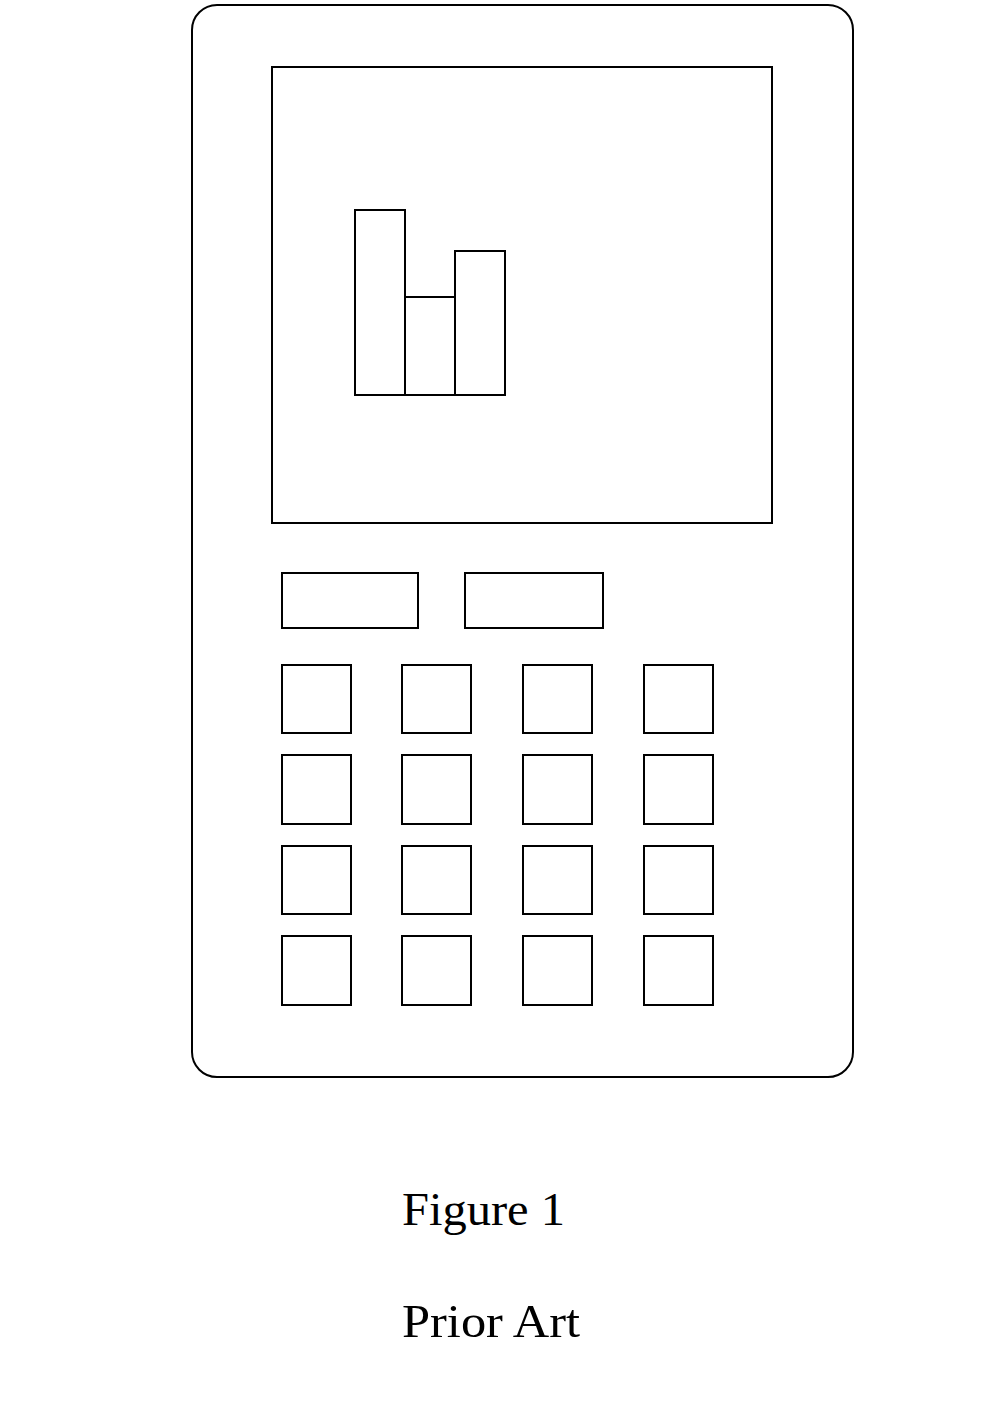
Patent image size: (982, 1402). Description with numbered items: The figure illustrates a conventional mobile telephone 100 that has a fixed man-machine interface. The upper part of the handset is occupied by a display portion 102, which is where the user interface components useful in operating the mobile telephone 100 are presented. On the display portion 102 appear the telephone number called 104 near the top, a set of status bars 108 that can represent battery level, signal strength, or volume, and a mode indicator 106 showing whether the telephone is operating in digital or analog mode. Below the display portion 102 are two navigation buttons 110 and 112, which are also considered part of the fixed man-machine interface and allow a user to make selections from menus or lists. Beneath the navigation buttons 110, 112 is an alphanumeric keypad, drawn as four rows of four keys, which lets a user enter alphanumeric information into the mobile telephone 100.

The mobile telephone 100 is at (193, 246).
The display portion 102 is at (334, 501).
The telephone number called 104 is at (628, 135).
The mode indicator 106 is at (660, 397).
The status bars 108 is at (518, 292).
The navigation button 110 is at (364, 612).
The navigation button 112 is at (546, 612).